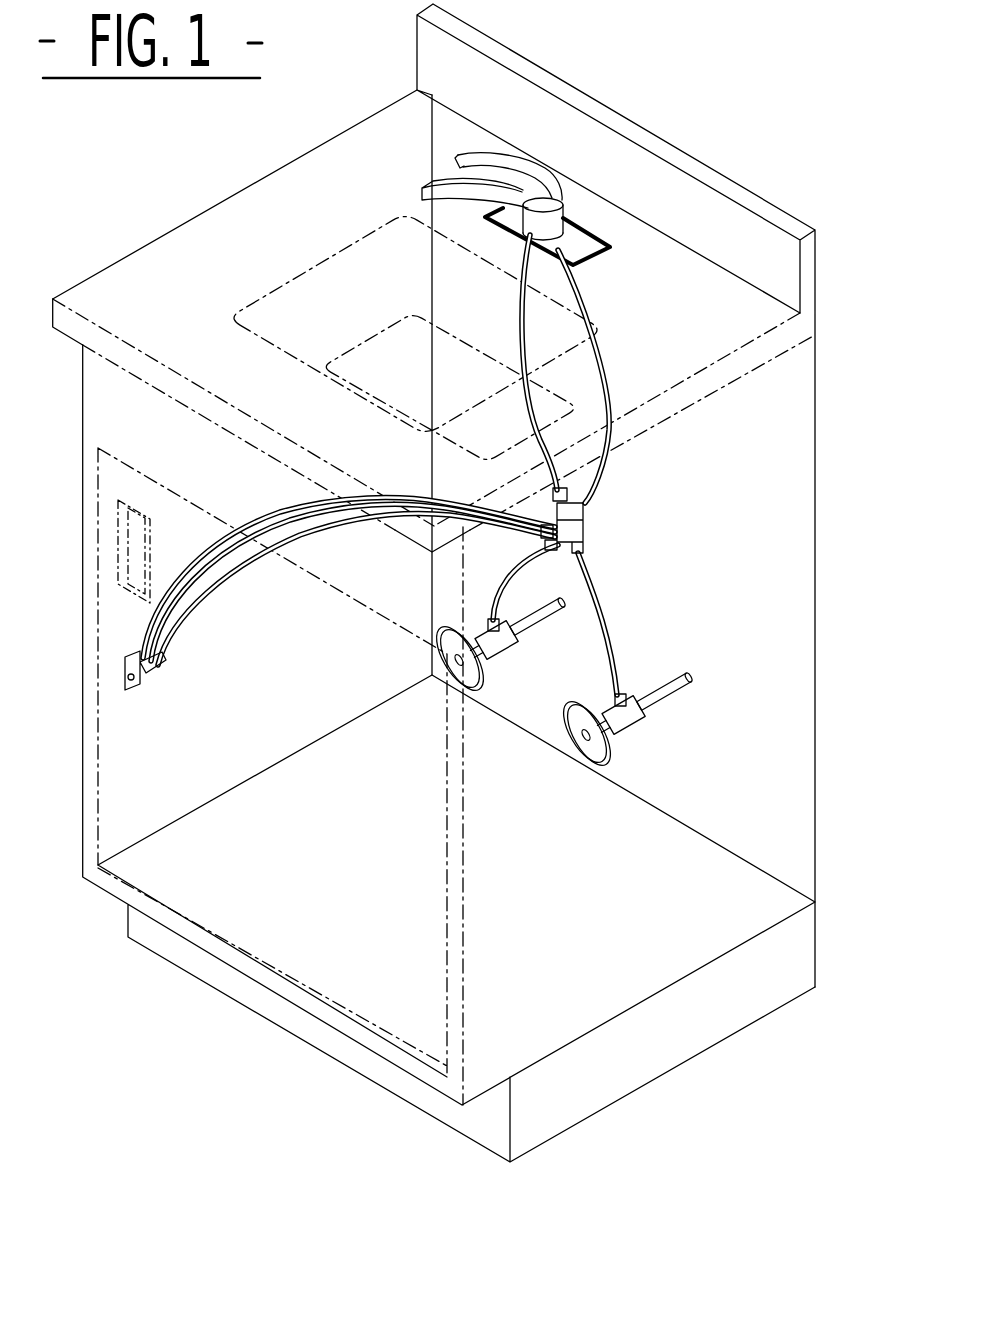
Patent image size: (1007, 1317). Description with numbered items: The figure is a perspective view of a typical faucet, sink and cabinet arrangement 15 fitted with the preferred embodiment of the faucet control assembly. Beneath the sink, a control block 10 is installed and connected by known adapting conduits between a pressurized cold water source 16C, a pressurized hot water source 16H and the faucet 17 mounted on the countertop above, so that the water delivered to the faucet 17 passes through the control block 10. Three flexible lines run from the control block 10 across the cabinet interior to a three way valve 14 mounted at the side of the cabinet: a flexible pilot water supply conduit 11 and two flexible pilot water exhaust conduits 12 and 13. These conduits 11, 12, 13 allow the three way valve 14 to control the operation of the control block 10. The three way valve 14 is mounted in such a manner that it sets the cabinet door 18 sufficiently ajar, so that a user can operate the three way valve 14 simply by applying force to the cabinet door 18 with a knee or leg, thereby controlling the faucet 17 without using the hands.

The control block 10 is at (588, 523).
The flexible pilot water supply conduit 11 is at (235, 572).
The flexible pilot water exhaust conduit 12 is at (180, 592).
The flexible pilot water exhaust conduit 13 is at (160, 647).
The three way valve 14 is at (157, 680).
The sink cabinet arrangement 15 is at (790, 213).
The pressurized hot water source 16H is at (513, 643).
The pressurized cold water source 16C is at (633, 718).
The faucet 17 is at (563, 218).
The cabinet door 18 is at (135, 470).